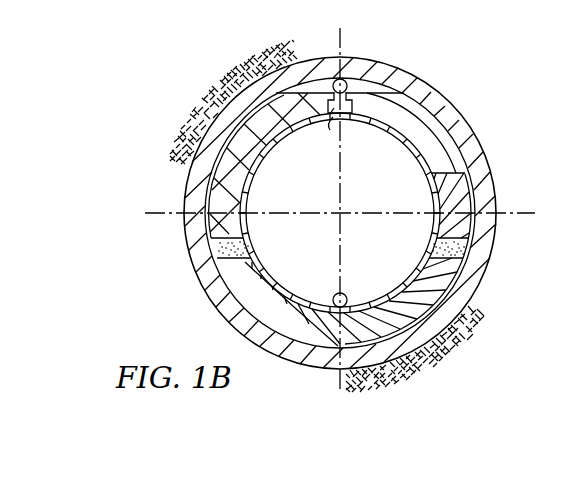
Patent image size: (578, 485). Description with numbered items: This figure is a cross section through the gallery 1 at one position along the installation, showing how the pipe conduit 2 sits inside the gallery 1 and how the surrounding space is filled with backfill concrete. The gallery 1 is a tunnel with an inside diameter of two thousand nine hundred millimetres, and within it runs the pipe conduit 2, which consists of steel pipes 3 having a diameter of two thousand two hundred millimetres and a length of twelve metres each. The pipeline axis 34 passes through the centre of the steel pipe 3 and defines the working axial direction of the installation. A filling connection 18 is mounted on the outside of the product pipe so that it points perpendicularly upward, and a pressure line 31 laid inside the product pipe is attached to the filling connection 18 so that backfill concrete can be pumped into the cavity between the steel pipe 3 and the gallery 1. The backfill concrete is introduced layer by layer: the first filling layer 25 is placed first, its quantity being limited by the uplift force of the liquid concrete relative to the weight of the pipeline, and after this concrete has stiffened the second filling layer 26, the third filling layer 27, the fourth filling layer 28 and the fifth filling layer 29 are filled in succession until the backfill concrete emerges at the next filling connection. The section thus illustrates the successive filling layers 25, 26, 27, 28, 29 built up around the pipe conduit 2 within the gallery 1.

The gallery 1 is at (467, 128).
The pipe conduit 2 is at (411, 270).
The steel pipe 3 is at (378, 292).
The filling connection 18 is at (363, 120).
The first filling layer 25 is at (250, 305).
The second filling layer 26 is at (248, 250).
The third filling layer 27 is at (250, 198).
The fourth filling layer 28 is at (328, 124).
The fifth filling layer 29 is at (336, 80).
The pressure line 31 is at (333, 296).
The pipeline axis 34 is at (341, 238).